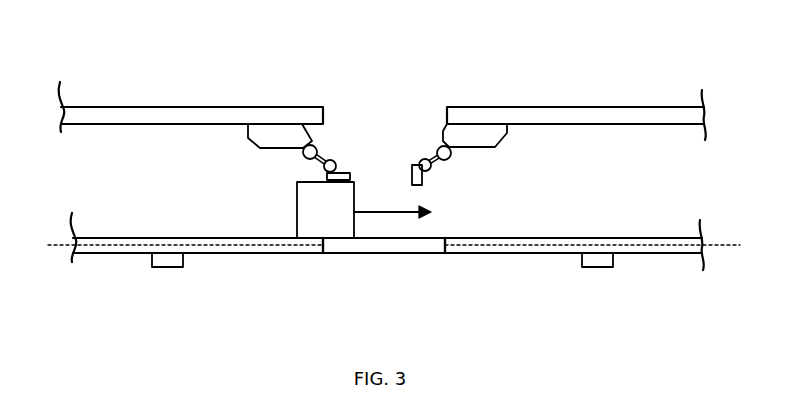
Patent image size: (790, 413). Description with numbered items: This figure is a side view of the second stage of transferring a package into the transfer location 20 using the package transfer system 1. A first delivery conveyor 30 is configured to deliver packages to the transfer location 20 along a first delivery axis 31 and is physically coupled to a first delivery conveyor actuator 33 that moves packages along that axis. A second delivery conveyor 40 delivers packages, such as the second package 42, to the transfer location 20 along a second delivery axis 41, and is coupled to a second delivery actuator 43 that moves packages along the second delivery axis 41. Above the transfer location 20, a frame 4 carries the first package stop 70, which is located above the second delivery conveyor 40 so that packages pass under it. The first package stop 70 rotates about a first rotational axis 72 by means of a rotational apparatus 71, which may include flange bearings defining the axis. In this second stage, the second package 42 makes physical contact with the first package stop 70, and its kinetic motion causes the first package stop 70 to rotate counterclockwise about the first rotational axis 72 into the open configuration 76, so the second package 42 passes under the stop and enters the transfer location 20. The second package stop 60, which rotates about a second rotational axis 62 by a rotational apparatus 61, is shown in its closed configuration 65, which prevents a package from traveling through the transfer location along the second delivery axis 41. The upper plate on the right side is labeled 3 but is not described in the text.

The package transfer system 1 is at (241, 98).
The second plate 3 is at (612, 107).
The frame 4 is at (163, 107).
The transfer location 20 is at (382, 255).
The first delivery conveyor 30 is at (632, 238).
The first delivery axis 31 is at (607, 245).
The first delivery conveyor actuator 33 is at (605, 270).
The second delivery conveyor 40 is at (108, 238).
The second delivery axis 41 is at (175, 244).
The second package 42 is at (297, 223).
The second delivery actuator 43 is at (167, 272).
The second package stop 60 is at (412, 175).
The rotational apparatus 61 is at (431, 168).
The second rotational axis 62 is at (422, 160).
The closed configuration 65 is at (436, 129).
The first package stop 70 is at (346, 173).
The rotational apparatus 71 is at (322, 170).
The first rotational axis 72 is at (335, 162).
The open configuration 76 is at (327, 152).